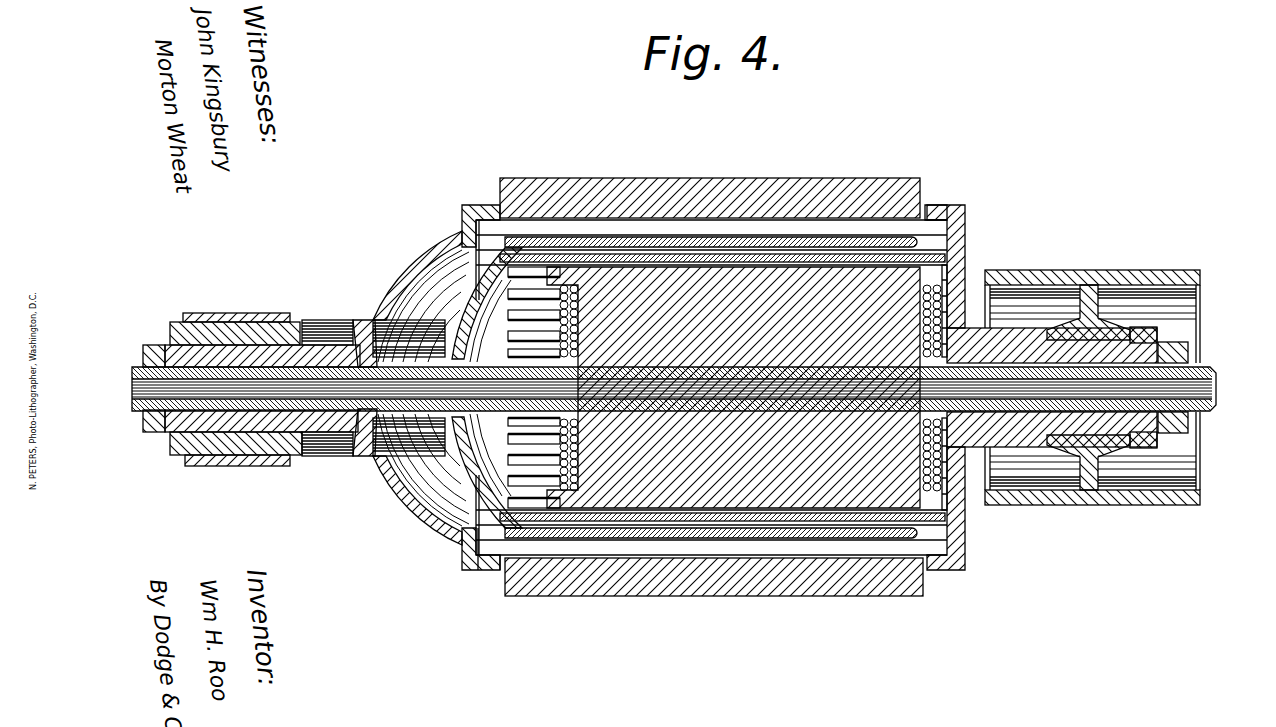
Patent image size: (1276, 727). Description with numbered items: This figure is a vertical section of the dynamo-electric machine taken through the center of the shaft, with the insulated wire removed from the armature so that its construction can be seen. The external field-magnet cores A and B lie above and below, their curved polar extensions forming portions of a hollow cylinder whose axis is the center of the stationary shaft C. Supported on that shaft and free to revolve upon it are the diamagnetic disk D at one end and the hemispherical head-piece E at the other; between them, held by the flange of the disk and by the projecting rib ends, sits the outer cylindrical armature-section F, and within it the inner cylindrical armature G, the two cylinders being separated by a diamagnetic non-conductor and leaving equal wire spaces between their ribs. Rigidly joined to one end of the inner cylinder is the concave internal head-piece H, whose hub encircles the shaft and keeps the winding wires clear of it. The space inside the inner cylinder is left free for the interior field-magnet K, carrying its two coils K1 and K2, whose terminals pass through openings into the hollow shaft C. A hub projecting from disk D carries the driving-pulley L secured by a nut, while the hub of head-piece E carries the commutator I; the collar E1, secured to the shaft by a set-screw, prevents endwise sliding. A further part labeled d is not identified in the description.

The field-magnet core A is at (710, 173).
The field-magnet core B is at (714, 605).
The shaft C is at (675, 385).
The disk D is at (1217, 333).
The hemispherical head-piece E is at (437, 385).
The collar E1 is at (151, 369).
The outer cylindrical armature-section F is at (937, 207).
The inner cylindrical armature G is at (460, 223).
The concave internal head-piece H is at (397, 512).
The commutator I is at (262, 372).
The interior field-magnet K is at (724, 387).
The coil of insulated wire K1 is at (967, 280).
The coil of insulated wire K2 is at (973, 487).
The driving-pulley L is at (1092, 368).
The coil windings d is at (460, 487).